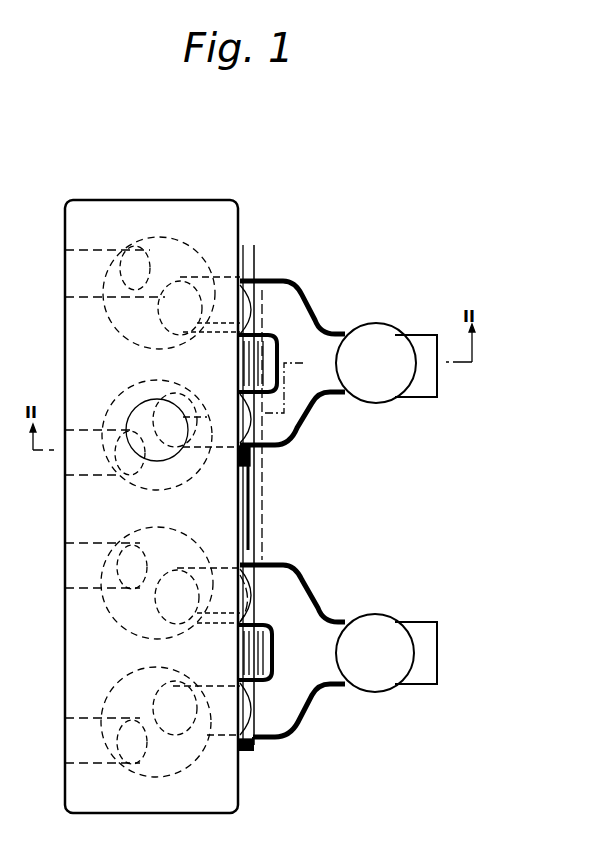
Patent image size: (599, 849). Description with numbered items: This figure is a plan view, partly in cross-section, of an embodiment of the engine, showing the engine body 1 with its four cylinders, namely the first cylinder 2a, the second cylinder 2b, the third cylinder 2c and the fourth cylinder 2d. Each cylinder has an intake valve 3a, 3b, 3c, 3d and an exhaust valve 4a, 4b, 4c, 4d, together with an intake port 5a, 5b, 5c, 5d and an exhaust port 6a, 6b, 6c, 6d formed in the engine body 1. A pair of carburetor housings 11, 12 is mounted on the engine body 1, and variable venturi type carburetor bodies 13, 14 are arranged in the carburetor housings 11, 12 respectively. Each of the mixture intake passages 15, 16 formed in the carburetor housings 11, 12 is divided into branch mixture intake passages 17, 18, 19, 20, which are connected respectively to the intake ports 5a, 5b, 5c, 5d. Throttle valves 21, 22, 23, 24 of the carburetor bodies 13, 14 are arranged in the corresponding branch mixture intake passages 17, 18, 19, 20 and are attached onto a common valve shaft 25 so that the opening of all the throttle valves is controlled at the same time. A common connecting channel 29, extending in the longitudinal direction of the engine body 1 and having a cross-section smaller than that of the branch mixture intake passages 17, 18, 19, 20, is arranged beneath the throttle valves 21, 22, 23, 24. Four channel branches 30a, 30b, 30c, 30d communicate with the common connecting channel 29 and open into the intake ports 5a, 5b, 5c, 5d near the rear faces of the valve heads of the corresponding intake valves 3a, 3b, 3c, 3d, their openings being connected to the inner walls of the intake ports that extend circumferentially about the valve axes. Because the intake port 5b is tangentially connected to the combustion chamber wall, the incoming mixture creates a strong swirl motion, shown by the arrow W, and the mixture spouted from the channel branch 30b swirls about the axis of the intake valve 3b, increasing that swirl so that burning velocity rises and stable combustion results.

The engine body 1 is at (242, 197).
The No. 1 cylinder 2a is at (108, 312).
The No. 2 cylinder 2b is at (128, 486).
The No. 3 cylinder 2c is at (117, 629).
The No. 4 cylinder 2d is at (150, 778).
The intake valve 3a is at (183, 282).
The intake valve 3b is at (158, 396).
The intake valve 3c is at (181, 570).
The intake valve 3d is at (172, 684).
The exhaust valve 4a is at (141, 248).
The exhaust valve 4b is at (123, 410).
The exhaust valve 4c is at (142, 545).
The exhaust valve 4d is at (124, 702).
The intake port 5a is at (213, 277).
The intake port 5b is at (214, 449).
The intake port 5c is at (213, 568).
The intake port 5d is at (214, 737).
The exhaust port 6a is at (65, 250).
The exhaust port 6b is at (65, 475).
The exhaust port 6c is at (65, 588).
The exhaust port 6d is at (68, 763).
The carburetor housing 11 is at (306, 293).
The carburetor housing 12 is at (321, 586).
The carburetor body 13 is at (378, 335).
The carburetor body 14 is at (378, 623).
The mixture intake passage 15 is at (309, 358).
The mixture intake passage 16 is at (317, 658).
The branch mixture intake passage 17 is at (257, 276).
The branch mixture intake passage 18 is at (265, 449).
The branch mixture intake passage 19 is at (268, 574).
The branch mixture intake passage 20 is at (268, 742).
The throttle valve 21 is at (264, 294).
The throttle valve 22 is at (297, 440).
The throttle valve 23 is at (258, 600).
The throttle valve 24 is at (262, 696).
The common valve shaft 25 is at (257, 512).
The common connecting channel 29 is at (258, 487).
The channel branch 30a is at (232, 326).
The channel branch 30b is at (236, 340).
The channel branch 30c is at (232, 616).
The channel branch 30d is at (238, 628).
The swirl motion W is at (175, 460).